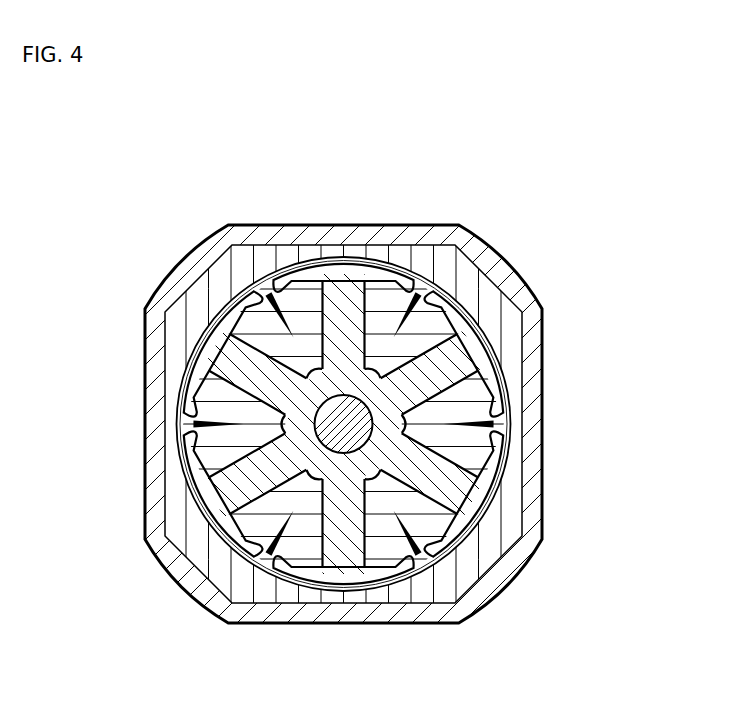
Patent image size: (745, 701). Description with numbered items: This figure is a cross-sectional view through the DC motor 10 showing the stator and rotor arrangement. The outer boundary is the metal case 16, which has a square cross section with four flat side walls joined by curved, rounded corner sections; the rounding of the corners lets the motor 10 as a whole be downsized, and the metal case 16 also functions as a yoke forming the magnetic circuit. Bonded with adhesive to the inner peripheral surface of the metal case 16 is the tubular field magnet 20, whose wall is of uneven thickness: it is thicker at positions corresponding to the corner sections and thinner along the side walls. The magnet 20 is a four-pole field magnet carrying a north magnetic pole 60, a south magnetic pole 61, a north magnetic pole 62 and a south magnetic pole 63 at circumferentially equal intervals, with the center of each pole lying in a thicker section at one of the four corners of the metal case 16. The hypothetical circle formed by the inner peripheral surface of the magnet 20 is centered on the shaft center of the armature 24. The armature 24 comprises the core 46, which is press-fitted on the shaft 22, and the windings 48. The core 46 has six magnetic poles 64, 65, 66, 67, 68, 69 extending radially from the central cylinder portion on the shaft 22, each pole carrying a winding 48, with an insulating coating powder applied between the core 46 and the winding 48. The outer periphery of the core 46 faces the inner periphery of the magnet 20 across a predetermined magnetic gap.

The DC motor 10 is at (597, 132).
The metal case 16 is at (513, 308).
The field magnet 20 is at (532, 330).
The shaft 22 is at (316, 420).
The armature 24 is at (372, 458).
The core 46 is at (460, 490).
The winding 48 is at (468, 427).
The magnetic pole (north pole) 60 is at (468, 265).
The magnetic pole (south pole) 61 is at (505, 565).
The magnetic pole (north pole) 62 is at (185, 563).
The magnetic pole (south pole) 63 is at (200, 297).
The magnetic pole 64 is at (460, 350).
The magnetic pole 65 is at (452, 533).
The magnetic pole 66 is at (345, 545).
The magnetic pole 67 is at (225, 497).
The magnetic pole 68 is at (215, 362).
The magnetic pole 69 is at (300, 293).